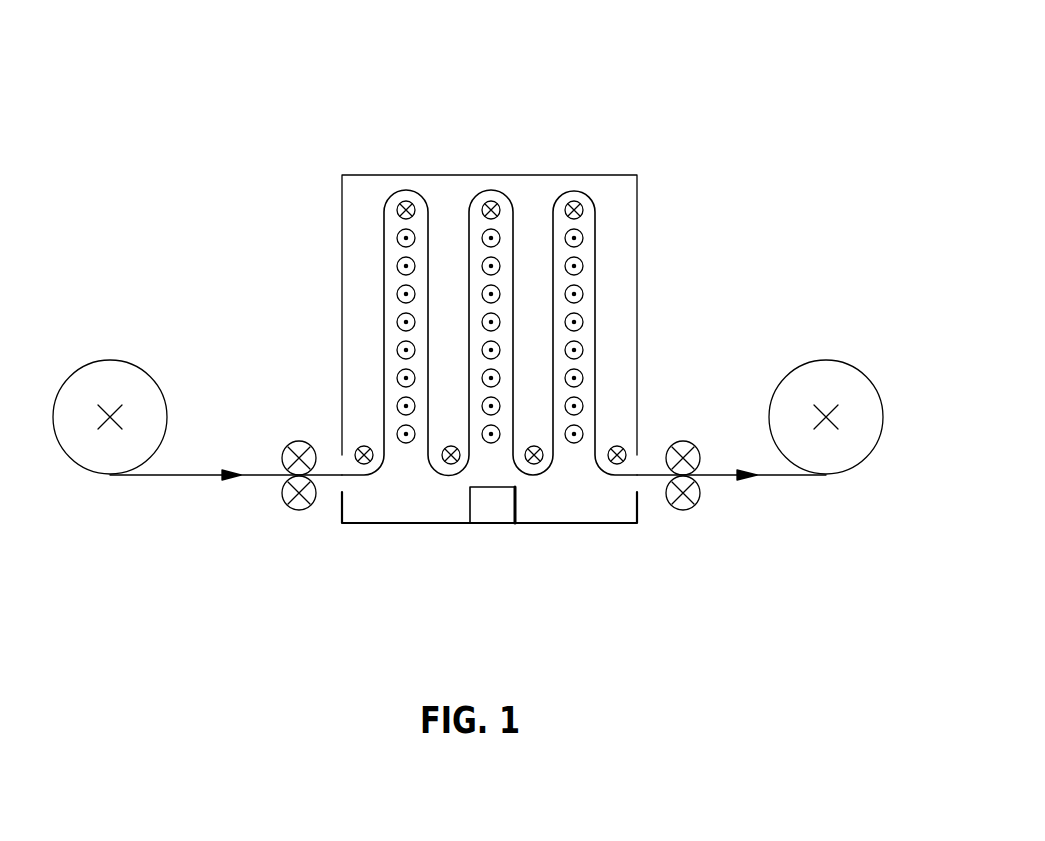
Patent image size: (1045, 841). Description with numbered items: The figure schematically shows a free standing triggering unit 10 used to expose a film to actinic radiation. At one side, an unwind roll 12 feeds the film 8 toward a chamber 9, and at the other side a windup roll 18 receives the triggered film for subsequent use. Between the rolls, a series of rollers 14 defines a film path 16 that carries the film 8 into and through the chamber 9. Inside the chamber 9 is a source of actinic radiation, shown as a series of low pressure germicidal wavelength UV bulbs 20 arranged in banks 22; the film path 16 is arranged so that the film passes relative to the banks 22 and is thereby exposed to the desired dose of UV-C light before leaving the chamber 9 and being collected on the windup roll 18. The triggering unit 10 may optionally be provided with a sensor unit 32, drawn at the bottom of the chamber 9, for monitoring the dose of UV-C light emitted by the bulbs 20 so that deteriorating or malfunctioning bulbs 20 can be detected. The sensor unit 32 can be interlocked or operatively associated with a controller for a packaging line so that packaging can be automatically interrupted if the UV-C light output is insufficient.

The film 8 is at (178, 478).
The chamber 9 is at (321, 201).
The triggering unit 10 is at (639, 91).
The unwind roll 12 is at (110, 367).
The rollers 14 is at (408, 205).
The film path 16 is at (383, 325).
The windup roll 18 is at (830, 361).
The UV bulbs 20 is at (580, 238).
The banks 22 is at (565, 262).
The sensor unit 32 is at (490, 508).